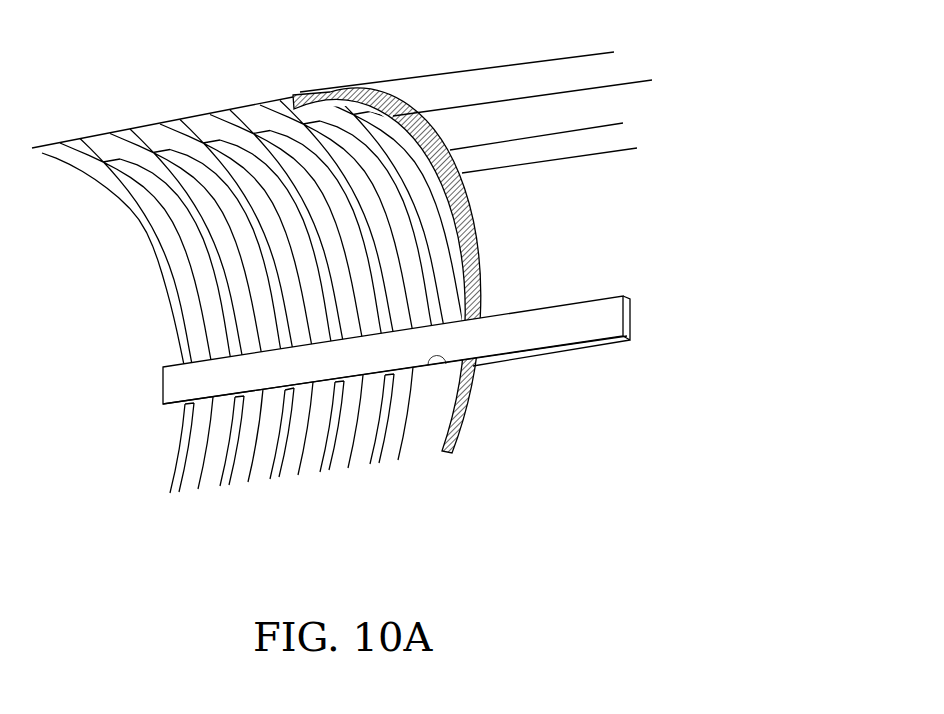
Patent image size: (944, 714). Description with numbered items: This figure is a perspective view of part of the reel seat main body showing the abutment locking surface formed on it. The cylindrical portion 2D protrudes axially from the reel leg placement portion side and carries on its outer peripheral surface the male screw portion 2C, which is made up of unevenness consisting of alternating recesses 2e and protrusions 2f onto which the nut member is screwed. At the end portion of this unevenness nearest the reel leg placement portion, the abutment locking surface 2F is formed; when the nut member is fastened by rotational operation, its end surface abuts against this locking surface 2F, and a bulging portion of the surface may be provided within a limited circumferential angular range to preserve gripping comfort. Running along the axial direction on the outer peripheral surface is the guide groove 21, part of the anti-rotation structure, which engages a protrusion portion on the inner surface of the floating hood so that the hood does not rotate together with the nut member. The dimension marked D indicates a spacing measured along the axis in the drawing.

The male screw portion 2C is at (107, 135).
The cylindrical portion 2D is at (182, 433).
The recess 2e is at (407, 148).
The protrusion 2f is at (233, 272).
The abutment locking surface 2F is at (433, 150).
The guide groove 21 is at (430, 370).
The dimension D is at (288, 50).